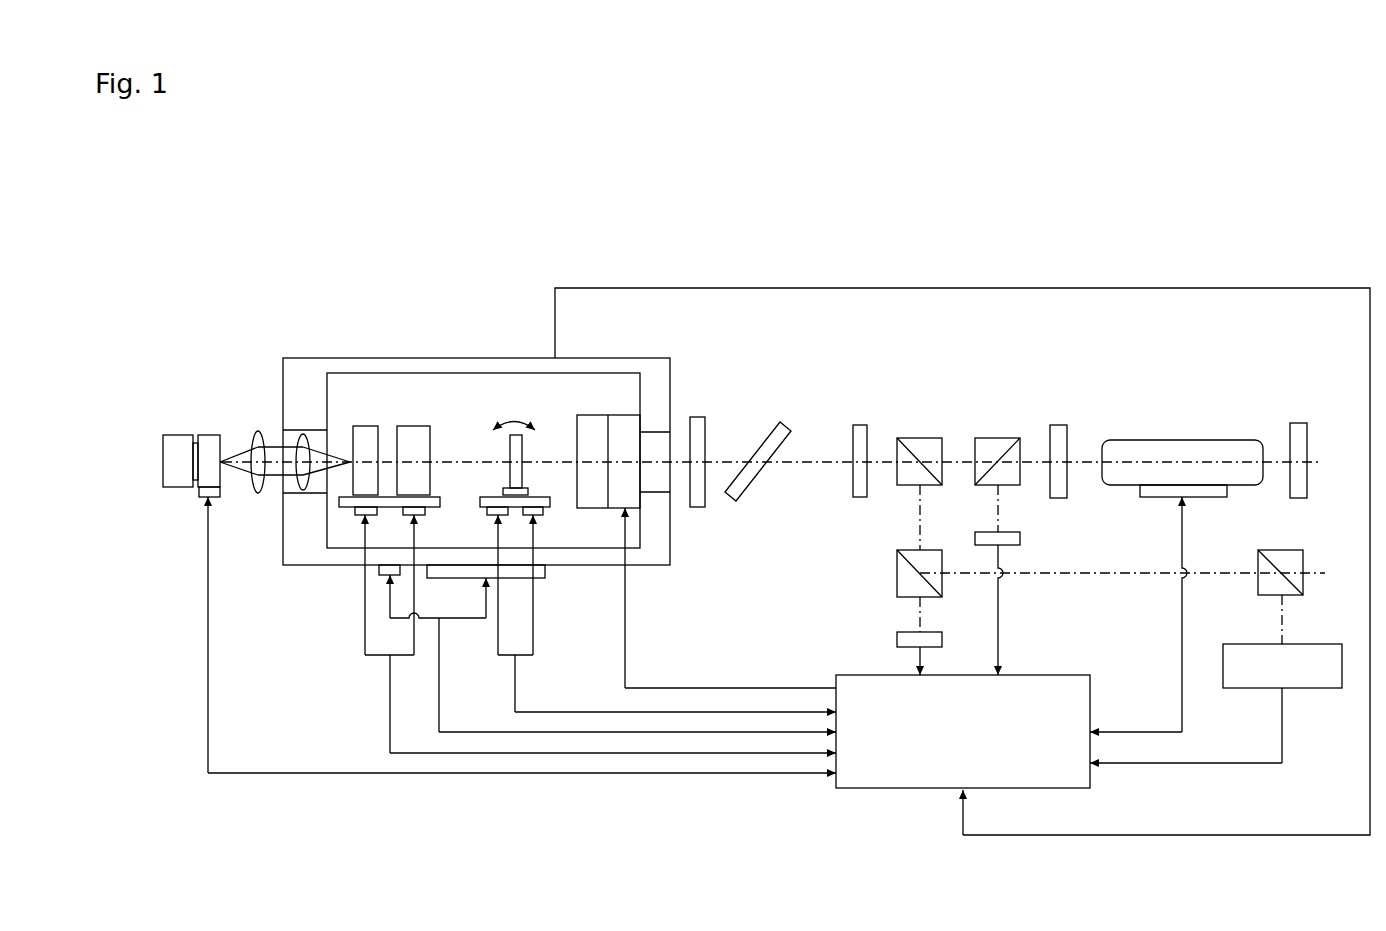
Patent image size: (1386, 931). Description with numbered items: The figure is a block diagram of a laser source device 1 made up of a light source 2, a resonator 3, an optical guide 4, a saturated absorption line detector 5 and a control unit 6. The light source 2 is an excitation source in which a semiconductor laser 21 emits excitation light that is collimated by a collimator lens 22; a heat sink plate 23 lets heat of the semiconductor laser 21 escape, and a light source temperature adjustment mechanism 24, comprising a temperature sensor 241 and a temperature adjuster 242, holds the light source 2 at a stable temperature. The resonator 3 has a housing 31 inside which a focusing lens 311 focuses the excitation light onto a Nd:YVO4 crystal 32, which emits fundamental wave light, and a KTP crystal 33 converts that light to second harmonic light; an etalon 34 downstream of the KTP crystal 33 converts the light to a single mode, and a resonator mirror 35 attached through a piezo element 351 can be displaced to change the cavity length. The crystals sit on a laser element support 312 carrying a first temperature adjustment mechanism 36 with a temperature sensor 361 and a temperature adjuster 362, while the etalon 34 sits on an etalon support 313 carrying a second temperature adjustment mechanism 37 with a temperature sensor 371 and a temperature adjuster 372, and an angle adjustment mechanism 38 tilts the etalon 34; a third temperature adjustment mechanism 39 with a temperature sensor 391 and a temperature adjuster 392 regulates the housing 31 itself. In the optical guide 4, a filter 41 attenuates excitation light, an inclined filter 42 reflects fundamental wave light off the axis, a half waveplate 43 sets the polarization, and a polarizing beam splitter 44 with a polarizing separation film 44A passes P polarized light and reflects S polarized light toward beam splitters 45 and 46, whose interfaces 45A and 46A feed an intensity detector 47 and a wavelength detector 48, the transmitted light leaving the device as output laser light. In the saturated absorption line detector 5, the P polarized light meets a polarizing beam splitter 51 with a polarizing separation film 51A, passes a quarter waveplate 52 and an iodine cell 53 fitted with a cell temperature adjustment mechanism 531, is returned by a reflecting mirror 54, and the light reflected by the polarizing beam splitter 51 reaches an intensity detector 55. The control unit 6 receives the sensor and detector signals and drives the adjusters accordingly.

The laser source device 1 is at (1106, 170).
The light source 2 is at (160, 429).
The semiconductor laser 21 is at (210, 440).
The collimator lens 22 is at (258, 492).
The heat sink plate 23 is at (177, 440).
The light source temperature adjustment mechanism 24 is at (160, 515).
The temperature sensor 241 is at (203, 495).
The temperature adjuster 242 is at (190, 460).
The resonator 3 is at (444, 489).
The housing 31 is at (306, 362).
The focusing lens 311 is at (297, 440).
The laser element support 312 is at (340, 500).
The etalon support 313 is at (532, 493).
The Nd:YVO4 crystal 32 is at (363, 426).
The KTP crystal 33 is at (413, 426).
The etalon 34 is at (536, 431).
The resonator mirror 35 is at (623, 411).
The piezo element 351 is at (622, 423).
The first temperature adjustment mechanism 36 is at (362, 543).
The temperature sensor 361 is at (360, 517).
The temperature adjuster 362 is at (425, 512).
The second temperature adjustment mechanism 37 is at (520, 562).
The temperature sensor 371 is at (487, 513).
The temperature adjuster 372 is at (547, 533).
The angle adjustment mechanism 38 is at (503, 490).
The third temperature adjustment mechanism 39 is at (397, 641).
The temperature sensor 391 is at (387, 578).
The temperature adjuster 392 is at (473, 578).
The optical guide 4 is at (1023, 530).
The filter 41 is at (697, 498).
The filter 42 is at (742, 490).
The half waveplate 43 is at (860, 498).
The polarizing beam splitter 44 is at (917, 427).
The polarizing separation film 44A is at (910, 440).
The beam splitter 45 is at (885, 586).
The interface 45A is at (898, 565).
The beam splitter 46 is at (1310, 562).
The interface 46A is at (1297, 578).
The intensity detector 47 is at (897, 640).
The wavelength detector 48 is at (1243, 688).
The saturated absorption line detector 5 is at (1155, 515).
The polarizing beam splitter 51 is at (1020, 427).
The polarizing separation film 51A is at (1012, 440).
The quarter waveplate 52 is at (1058, 428).
The iodine cell 53 is at (1176, 554).
The cell temperature adjustment mechanism 531 is at (1155, 498).
The reflecting mirror 54 is at (1298, 423).
The intensity detector 55 is at (1020, 538).
The control unit 6 is at (870, 790).